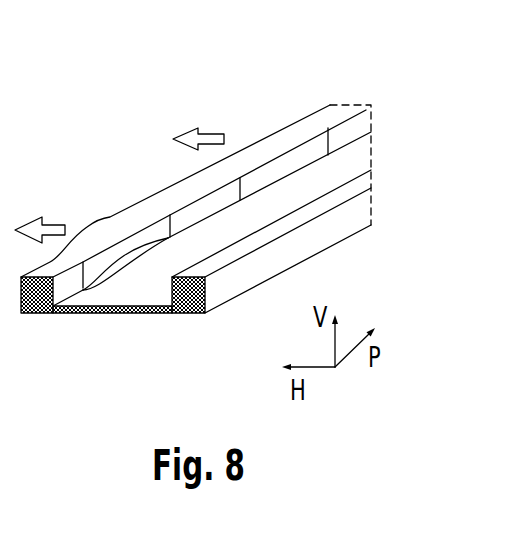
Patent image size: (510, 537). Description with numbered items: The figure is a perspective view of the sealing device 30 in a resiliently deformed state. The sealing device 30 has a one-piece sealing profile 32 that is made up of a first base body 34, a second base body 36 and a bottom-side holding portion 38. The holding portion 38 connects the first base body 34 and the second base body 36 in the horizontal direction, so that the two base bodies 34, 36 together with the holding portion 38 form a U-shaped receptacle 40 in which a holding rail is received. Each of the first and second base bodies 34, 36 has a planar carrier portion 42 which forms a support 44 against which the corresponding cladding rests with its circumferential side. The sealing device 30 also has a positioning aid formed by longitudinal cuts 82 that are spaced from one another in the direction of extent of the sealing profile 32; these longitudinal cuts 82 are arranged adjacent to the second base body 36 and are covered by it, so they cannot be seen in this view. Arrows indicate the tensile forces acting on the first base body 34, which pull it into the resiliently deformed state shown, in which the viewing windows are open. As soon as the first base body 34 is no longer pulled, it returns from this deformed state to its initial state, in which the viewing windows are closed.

The sealing device 30 is at (193, 199).
The sealing profile 32 is at (170, 78).
The first base body 34 is at (42, 315).
The second base body 36 is at (183, 313).
The holding portion 38 is at (137, 313).
The U-shaped receptacle 40 is at (128, 293).
The carrier portion 42 is at (247, 150).
The support 44 is at (79, 240).
The longitudinal cuts 82 is at (127, 262).